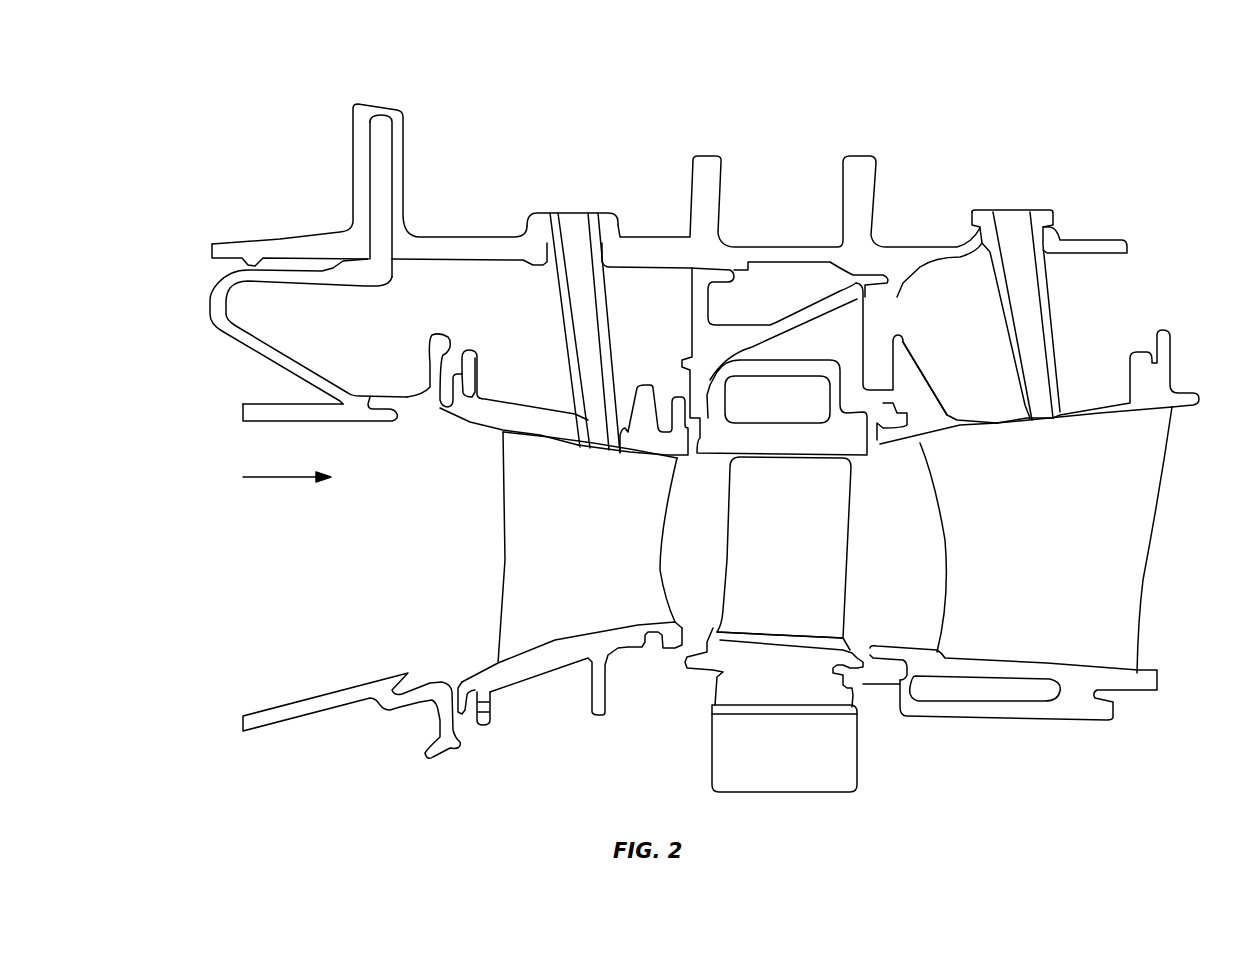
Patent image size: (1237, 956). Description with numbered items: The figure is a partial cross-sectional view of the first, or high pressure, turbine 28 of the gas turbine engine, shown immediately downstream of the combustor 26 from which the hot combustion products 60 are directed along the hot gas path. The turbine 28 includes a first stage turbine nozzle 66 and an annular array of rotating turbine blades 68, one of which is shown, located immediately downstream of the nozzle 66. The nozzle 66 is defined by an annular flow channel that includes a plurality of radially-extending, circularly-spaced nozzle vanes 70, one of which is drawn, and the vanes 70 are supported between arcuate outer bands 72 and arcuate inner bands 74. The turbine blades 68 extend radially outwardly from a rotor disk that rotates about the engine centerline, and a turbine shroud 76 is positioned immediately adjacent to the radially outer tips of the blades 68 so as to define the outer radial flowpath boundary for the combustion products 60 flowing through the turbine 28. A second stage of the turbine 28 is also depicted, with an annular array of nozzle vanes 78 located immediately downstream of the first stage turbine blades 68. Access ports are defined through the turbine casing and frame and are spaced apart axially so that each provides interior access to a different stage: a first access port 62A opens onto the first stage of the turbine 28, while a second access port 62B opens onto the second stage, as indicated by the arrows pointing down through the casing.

The first (high pressure) turbine 28 is at (640, 92).
The first access port 62A is at (569, 209).
The second access port 62B is at (1012, 209).
The outer band 72 is at (522, 410).
The turbine shroud 76 is at (808, 377).
The combustion products 60 is at (273, 480).
The first stage turbine nozzle 66 is at (538, 591).
The nozzle vane 70 is at (587, 565).
The inner band 74 is at (527, 665).
The turbine blade 68 is at (793, 556).
The second stage nozzle vane 78 is at (1036, 538).
The combustor 26 is at (272, 708).